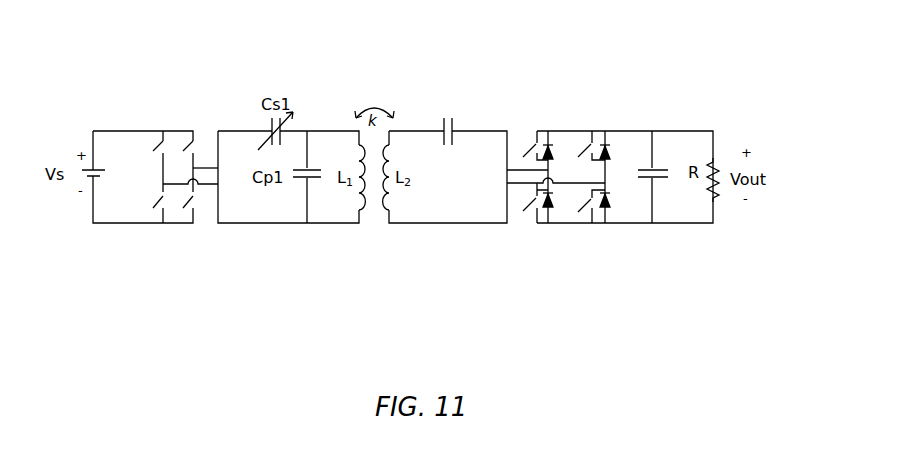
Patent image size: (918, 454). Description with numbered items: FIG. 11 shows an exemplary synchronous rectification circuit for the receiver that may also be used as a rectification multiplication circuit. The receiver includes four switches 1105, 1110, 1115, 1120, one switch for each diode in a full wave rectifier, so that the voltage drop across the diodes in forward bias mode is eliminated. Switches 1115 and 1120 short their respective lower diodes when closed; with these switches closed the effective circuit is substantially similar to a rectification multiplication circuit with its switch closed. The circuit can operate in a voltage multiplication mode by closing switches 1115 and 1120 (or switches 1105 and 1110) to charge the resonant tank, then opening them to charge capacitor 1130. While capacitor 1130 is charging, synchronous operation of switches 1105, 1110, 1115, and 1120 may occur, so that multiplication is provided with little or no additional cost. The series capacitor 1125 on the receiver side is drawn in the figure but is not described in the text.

The switch 1105 is at (527, 140).
The switch 1110 is at (582, 128).
The switch 1115 is at (531, 220).
The switch 1120 is at (586, 212).
The series capacitor Cs2 1125 is at (428, 118).
The capacitor 1130 is at (662, 157).